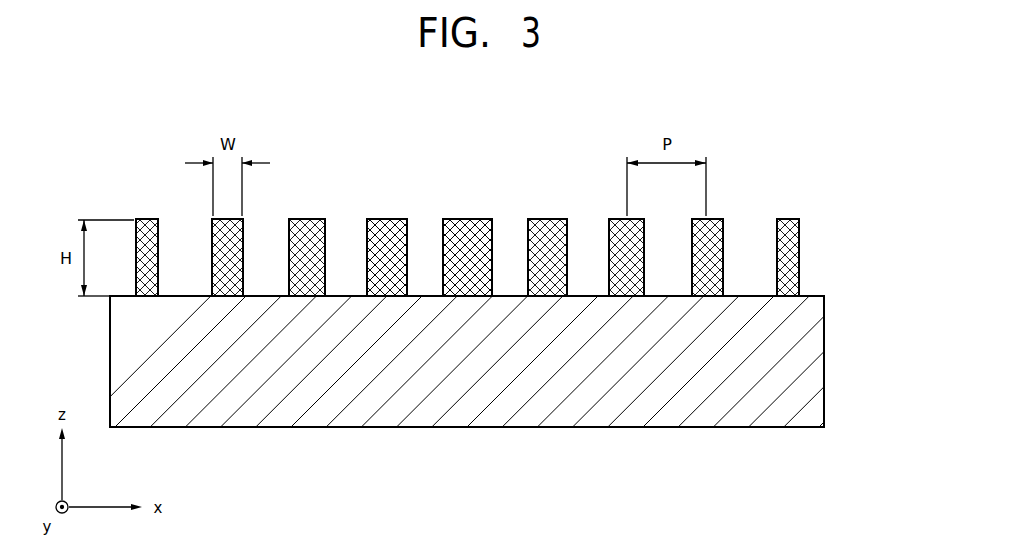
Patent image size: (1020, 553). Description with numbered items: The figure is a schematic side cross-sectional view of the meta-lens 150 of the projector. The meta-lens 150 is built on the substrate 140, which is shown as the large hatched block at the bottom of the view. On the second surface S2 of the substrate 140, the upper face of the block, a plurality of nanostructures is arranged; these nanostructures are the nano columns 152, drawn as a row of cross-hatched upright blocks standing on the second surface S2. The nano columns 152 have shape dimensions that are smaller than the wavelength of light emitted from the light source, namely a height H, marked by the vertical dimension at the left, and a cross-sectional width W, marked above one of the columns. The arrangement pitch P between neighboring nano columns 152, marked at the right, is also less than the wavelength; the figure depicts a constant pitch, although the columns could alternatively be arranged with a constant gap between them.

The substrate 140 is at (806, 386).
The meta-lens 150 is at (806, 230).
The nano columns 152 is at (398, 219).
The second surface S2 is at (818, 296).